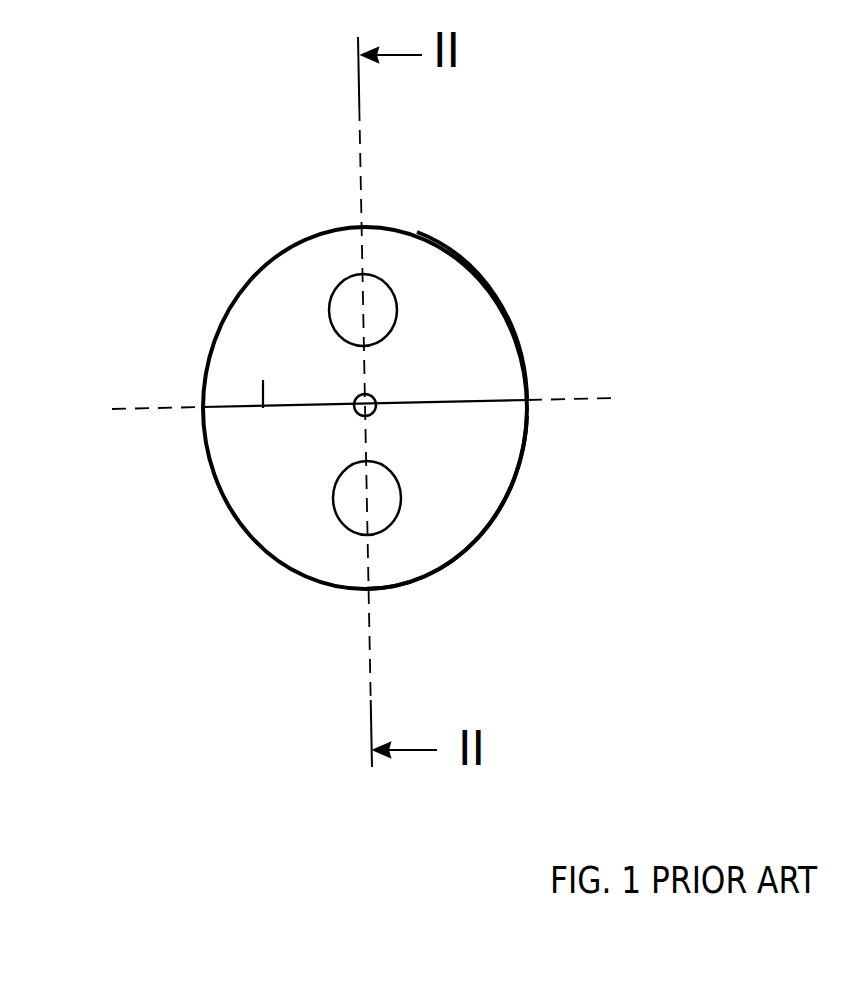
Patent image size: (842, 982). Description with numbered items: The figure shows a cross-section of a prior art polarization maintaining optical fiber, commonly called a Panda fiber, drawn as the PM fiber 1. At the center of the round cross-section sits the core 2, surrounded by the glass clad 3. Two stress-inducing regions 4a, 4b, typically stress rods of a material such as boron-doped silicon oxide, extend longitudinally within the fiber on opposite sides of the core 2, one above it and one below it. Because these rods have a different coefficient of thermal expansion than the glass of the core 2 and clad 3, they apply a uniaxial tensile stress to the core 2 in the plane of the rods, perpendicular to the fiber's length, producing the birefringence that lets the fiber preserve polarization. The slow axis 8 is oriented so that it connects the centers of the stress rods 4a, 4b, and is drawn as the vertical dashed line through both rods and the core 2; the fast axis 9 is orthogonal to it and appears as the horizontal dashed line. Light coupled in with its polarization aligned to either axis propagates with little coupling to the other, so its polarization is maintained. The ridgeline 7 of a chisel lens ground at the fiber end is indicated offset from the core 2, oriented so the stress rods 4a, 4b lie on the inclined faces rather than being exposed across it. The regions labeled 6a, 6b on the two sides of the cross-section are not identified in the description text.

The PM fiber 1 is at (380, 389).
The core 2 is at (362, 402).
The clad 3 is at (222, 495).
The stress-inducing region 4a is at (380, 300).
The stress-inducing region 4b is at (353, 510).
The first half portion 6a is at (467, 347).
The second half portion 6b is at (480, 460).
The ridgeline 7 is at (263, 382).
The slow axis 8 is at (369, 605).
The fast axis 9 is at (145, 413).